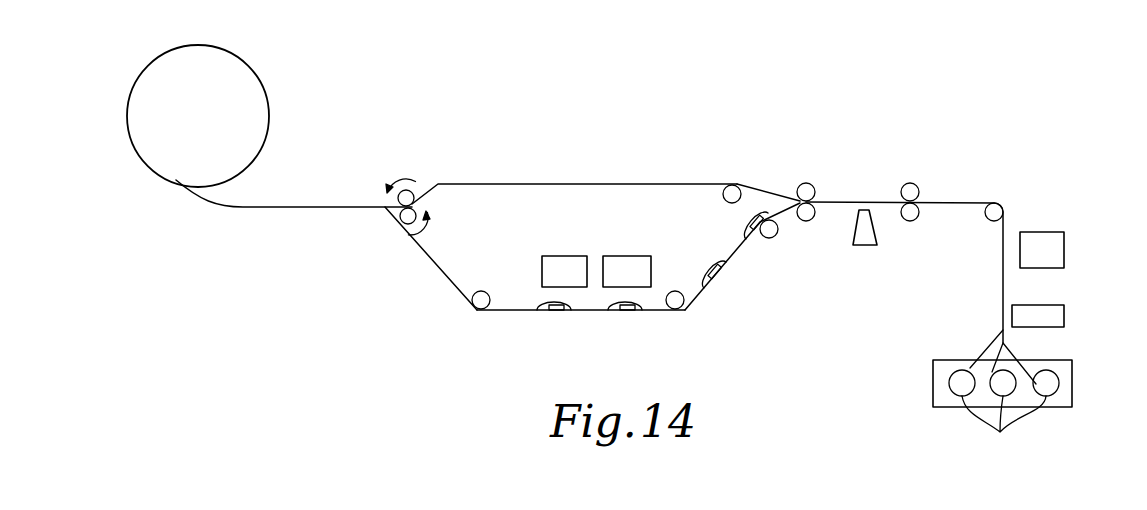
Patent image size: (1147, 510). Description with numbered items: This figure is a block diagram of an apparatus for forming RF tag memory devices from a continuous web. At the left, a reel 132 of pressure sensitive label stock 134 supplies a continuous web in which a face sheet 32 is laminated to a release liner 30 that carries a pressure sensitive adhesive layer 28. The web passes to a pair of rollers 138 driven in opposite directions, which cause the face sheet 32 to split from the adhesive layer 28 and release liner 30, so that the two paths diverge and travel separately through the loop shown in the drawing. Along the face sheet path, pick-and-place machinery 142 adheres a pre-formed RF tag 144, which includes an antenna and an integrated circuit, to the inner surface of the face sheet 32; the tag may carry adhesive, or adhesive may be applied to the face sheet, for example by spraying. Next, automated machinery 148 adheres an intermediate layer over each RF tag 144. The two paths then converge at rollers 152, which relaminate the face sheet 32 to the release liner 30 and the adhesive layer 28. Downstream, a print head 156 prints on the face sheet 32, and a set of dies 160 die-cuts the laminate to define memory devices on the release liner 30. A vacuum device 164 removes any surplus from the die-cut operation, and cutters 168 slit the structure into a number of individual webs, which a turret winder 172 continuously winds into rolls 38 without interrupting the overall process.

The reel 132 is at (268, 102).
The pressure sensitive label stock 134 is at (293, 208).
The pair of rollers 138 is at (417, 186).
The release liner 30 is at (572, 183).
The pressure sensitive adhesive layer 28 is at (545, 186).
The face sheet 32 is at (433, 267).
The pick-and-place machinery 142 is at (568, 255).
The automated machinery 148 is at (633, 255).
The RF tag 144 is at (540, 309).
The rollers 152 is at (805, 182).
The print head 156 is at (863, 247).
The set of dies 160 is at (922, 217).
The vacuum device 164 is at (1043, 231).
The cutters 168 is at (1064, 316).
The turret winder 172 is at (1072, 385).
The rolls 38 is at (1000, 432).